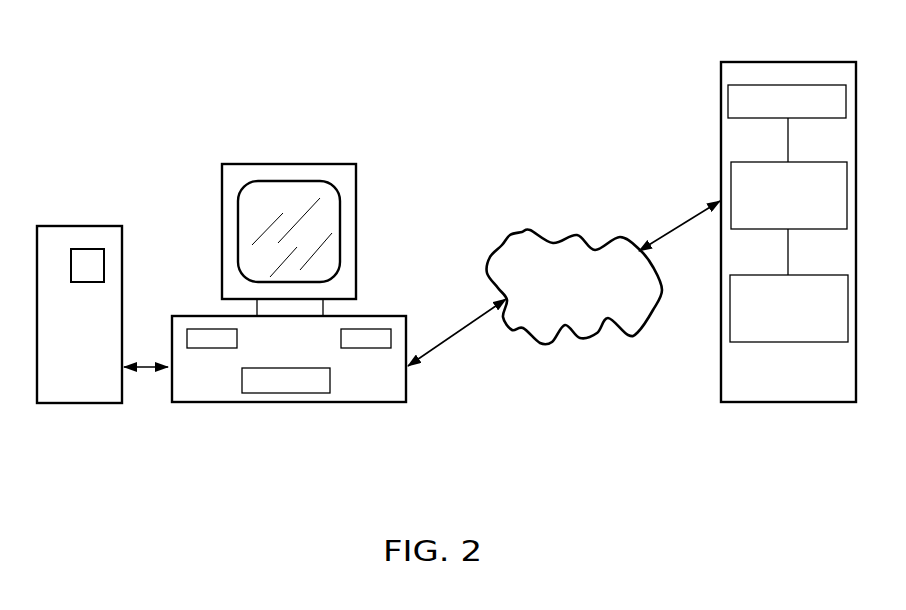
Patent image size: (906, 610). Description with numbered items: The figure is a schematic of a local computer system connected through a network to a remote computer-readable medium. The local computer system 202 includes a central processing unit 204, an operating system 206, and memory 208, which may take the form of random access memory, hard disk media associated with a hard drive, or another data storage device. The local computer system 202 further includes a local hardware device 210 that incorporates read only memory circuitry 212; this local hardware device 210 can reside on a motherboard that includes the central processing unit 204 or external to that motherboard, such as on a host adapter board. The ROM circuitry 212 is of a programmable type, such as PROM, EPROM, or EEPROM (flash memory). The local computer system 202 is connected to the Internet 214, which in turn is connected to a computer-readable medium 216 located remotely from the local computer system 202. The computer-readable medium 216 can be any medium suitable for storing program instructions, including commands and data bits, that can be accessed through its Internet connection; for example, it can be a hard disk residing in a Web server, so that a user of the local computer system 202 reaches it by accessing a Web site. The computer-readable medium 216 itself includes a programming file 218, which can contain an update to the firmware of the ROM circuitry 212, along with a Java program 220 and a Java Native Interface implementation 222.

The local computer system 202 is at (299, 146).
The central processing unit 204 is at (215, 332).
The operating system 206 is at (380, 332).
The memory 208 is at (315, 390).
The local hardware device 210 is at (47, 242).
The read only memory circuitry 212 is at (93, 258).
The Internet 214 is at (555, 257).
The computer-readable medium 216 is at (772, 60).
The programming file 218 is at (738, 98).
The Java program 220 is at (738, 183).
The Java Native Interface implementation 222 is at (738, 303).